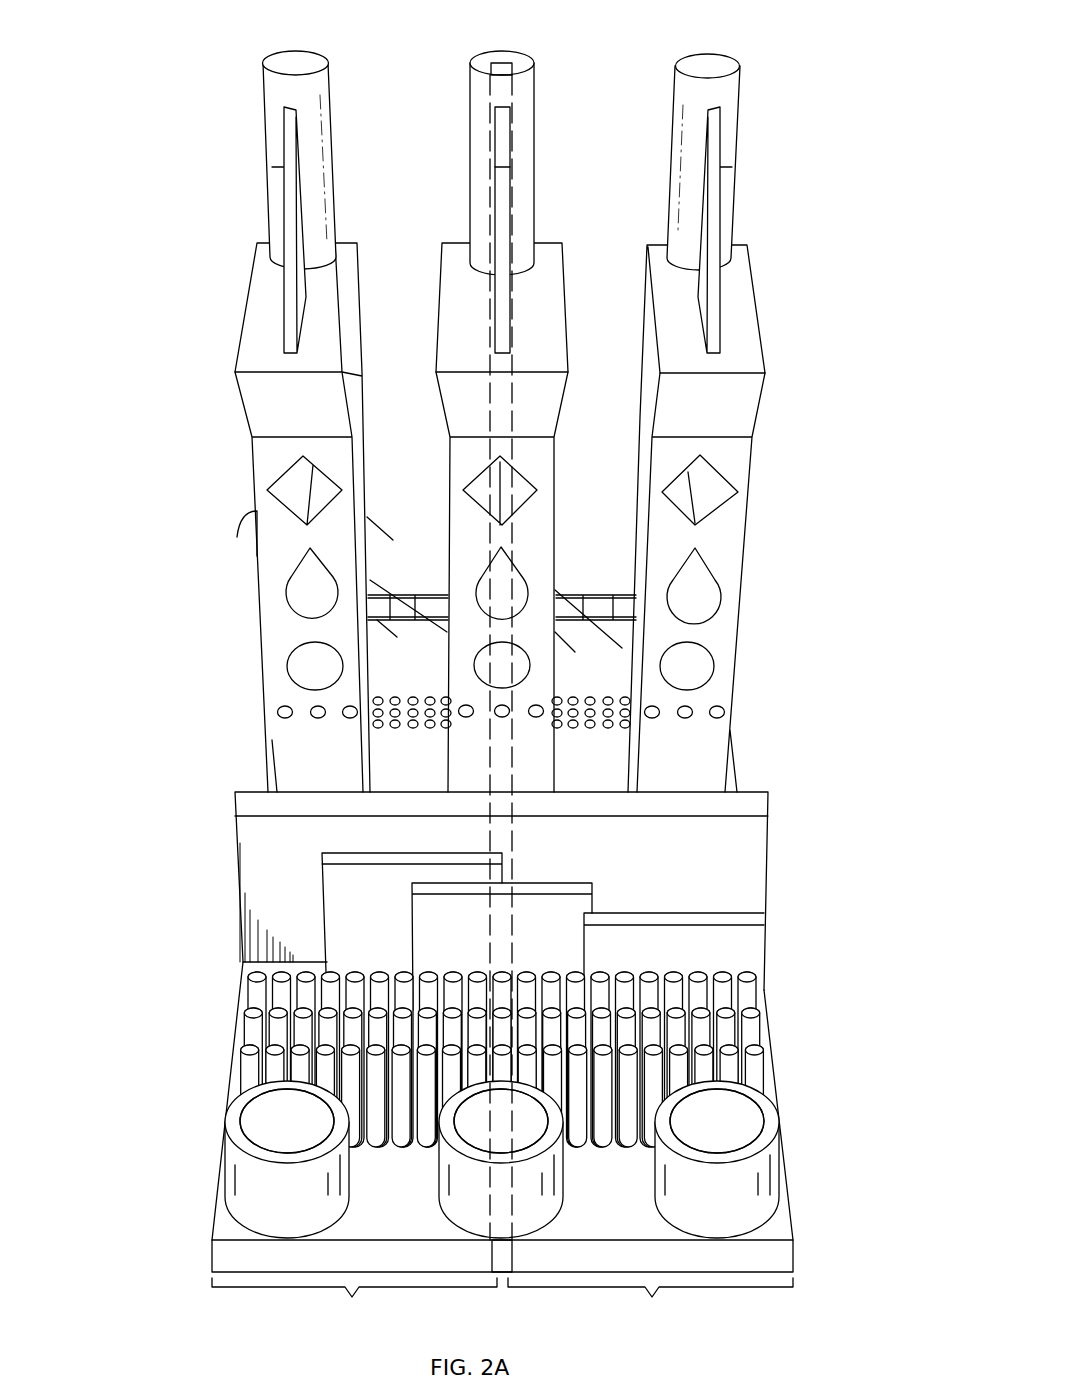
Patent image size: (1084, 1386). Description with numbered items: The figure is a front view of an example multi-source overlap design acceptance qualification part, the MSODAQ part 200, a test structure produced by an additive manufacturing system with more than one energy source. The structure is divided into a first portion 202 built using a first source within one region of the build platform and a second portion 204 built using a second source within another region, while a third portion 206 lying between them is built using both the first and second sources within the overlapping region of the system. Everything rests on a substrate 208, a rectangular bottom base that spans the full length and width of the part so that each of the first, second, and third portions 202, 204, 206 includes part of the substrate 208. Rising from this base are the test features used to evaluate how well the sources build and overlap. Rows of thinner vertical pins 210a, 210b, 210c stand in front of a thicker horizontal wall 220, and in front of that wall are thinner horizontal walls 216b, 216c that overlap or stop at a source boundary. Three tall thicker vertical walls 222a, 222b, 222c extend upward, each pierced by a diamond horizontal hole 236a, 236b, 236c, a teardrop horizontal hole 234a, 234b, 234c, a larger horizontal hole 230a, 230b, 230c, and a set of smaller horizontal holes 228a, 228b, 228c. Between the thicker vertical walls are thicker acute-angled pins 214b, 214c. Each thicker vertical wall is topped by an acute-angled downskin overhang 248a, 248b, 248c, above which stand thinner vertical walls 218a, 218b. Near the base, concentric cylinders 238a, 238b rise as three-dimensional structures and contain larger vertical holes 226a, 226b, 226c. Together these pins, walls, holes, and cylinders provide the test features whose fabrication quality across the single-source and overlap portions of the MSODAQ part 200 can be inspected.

The MSODAQ part 200 is at (206, 52).
The first portion 202 is at (354, 1301).
The second portion 204 is at (650, 1301).
The third portion 206 is at (514, 863).
The substrate 208 is at (793, 1252).
The thinner vertical pin 210a is at (246, 982).
The thinner vertical pin 210b is at (758, 988).
The thinner vertical pin 210c is at (490, 962).
The thicker acute-angled pin 214b is at (603, 623).
The thicker acute-angled pin 214c is at (430, 668).
The thinner horizontal wall 216b is at (764, 940).
The thinner horizontal wall 216c is at (592, 898).
The thinner vertical wall 218a is at (283, 130).
The thinner vertical wall 218b is at (720, 128).
The thicker horizontal wall 220 is at (766, 845).
The thicker vertical wall 222a is at (288, 757).
The thicker vertical wall 222b is at (715, 755).
The thicker vertical wall 222c is at (465, 770).
The larger vertical hole 226a is at (263, 1126).
The larger vertical hole 226b is at (741, 1126).
The larger vertical hole 226c is at (476, 1128).
The smaller horizontal hole 228a is at (282, 713).
The smaller horizontal hole 228b is at (722, 713).
The smaller horizontal hole 228c is at (537, 718).
The larger horizontal hole 230a is at (307, 672).
The larger horizontal hole 230b is at (697, 670).
The larger horizontal hole 230c is at (520, 665).
The teardrop horizontal hole 234a is at (300, 584).
The teardrop horizontal hole 234b is at (705, 592).
The teardrop horizontal hole 234c is at (477, 587).
The diamond horizontal hole 236a is at (290, 487).
The diamond horizontal hole 236b is at (713, 483).
The diamond horizontal hole 236c is at (478, 487).
The concentric cylinders 238a is at (226, 1180).
The concentric cylinders 238b is at (779, 1183).
The acute-angled downskin overhang 248a is at (240, 386).
The acute-angled downskin overhang 248b is at (765, 388).
The acute-angled downskin overhang 248c is at (556, 412).